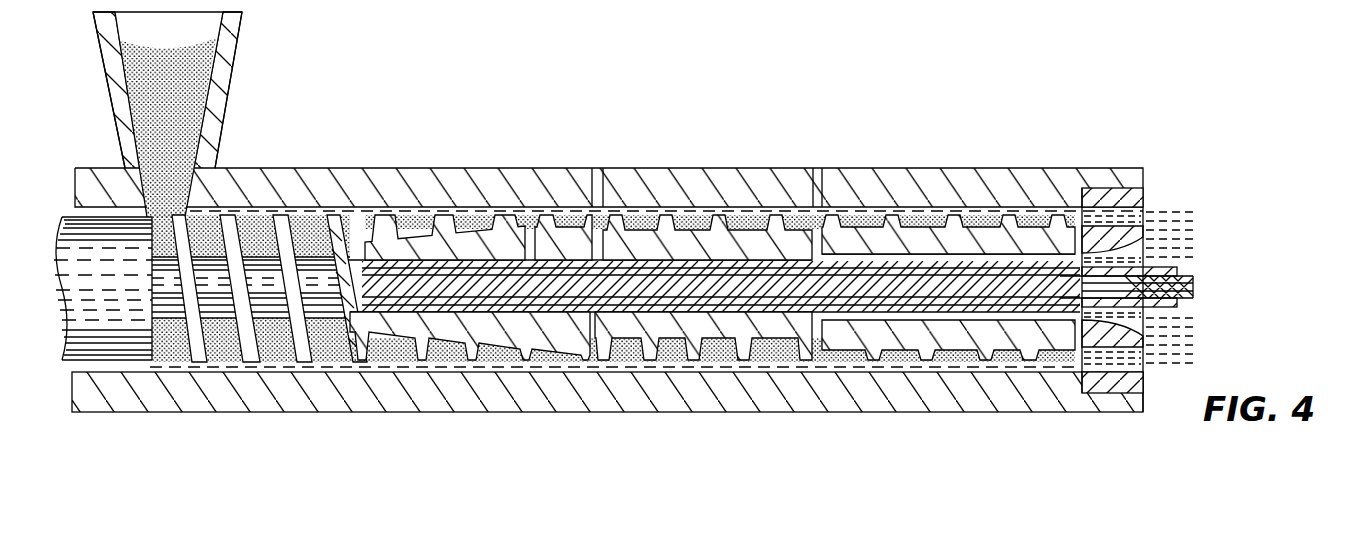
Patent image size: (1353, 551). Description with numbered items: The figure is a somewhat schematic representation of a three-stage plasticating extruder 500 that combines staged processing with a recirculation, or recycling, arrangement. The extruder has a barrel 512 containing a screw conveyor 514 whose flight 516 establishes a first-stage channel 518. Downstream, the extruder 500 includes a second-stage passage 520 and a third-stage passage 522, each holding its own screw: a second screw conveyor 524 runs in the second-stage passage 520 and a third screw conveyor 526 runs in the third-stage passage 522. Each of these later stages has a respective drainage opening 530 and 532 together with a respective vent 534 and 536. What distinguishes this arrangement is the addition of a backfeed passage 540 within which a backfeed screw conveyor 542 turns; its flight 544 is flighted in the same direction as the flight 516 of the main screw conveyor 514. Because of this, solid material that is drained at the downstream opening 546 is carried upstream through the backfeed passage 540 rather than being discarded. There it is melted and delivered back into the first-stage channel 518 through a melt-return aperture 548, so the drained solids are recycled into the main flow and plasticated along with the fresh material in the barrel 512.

The three-stage extruder 500 is at (425, 165).
The barrel 512 is at (509, 153).
The screw conveyor 514 is at (977, 218).
The flight 516 is at (233, 210).
The first-stage channel 518 is at (207, 223).
The second-stage passage 520 is at (705, 305).
The third-stage passage 522 is at (895, 315).
The second screw conveyor 524 is at (663, 308).
The third screw conveyor 526 is at (968, 320).
The drainage opening 530 is at (600, 250).
The drainage opening 532 is at (822, 240).
The vent 534 is at (598, 205).
The vent 536 is at (818, 205).
The backfeed passage 540 is at (442, 310).
The backfeed screw conveyor 542 is at (397, 312).
The flight 544 is at (488, 300).
The downstream opening 546 is at (537, 233).
The melt-return aperture 548 is at (360, 240).